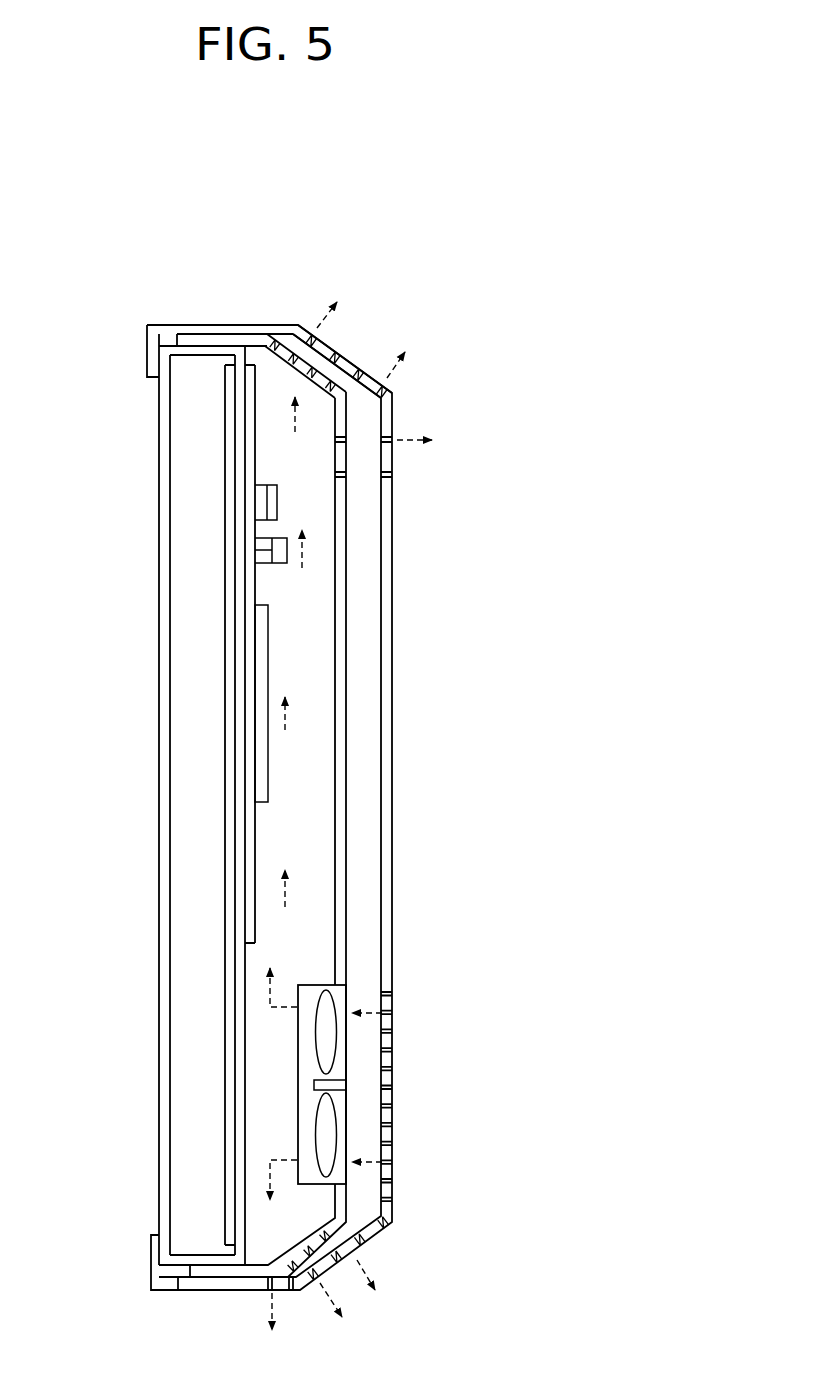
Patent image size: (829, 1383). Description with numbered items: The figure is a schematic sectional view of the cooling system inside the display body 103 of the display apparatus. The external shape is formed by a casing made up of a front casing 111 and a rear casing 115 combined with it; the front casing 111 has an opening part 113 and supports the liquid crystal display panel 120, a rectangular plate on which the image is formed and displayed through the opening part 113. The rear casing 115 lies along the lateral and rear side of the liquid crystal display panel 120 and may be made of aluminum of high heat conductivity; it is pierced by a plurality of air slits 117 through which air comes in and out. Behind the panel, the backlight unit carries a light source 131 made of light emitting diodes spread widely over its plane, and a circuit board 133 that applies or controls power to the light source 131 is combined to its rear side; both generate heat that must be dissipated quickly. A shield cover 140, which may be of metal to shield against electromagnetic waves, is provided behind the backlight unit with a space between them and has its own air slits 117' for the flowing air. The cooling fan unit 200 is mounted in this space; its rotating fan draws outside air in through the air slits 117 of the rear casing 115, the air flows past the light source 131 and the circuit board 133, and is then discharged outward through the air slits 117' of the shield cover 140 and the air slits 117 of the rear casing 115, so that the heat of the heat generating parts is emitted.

The display body 103 is at (108, 263).
The front casing 111 is at (147, 333).
The opening part 113 is at (145, 383).
The rear casing 115 is at (208, 323).
The air slits 117 is at (346, 346).
The air slits 117' is at (305, 325).
The liquid crystal display panel 120 is at (159, 712).
The light source 131 is at (225, 508).
The circuit board 133 is at (246, 577).
The shield cover 140 is at (347, 733).
The cooling fan unit 200 is at (345, 1040).